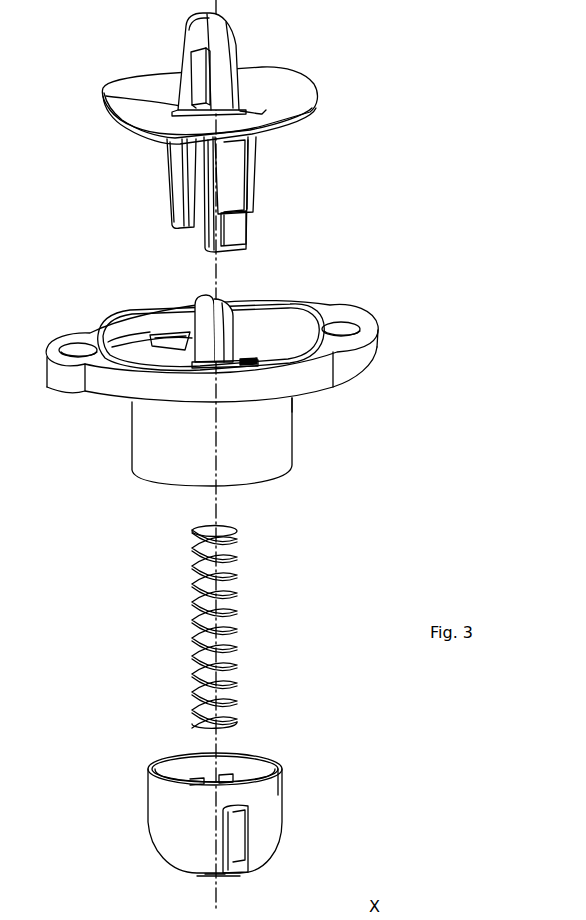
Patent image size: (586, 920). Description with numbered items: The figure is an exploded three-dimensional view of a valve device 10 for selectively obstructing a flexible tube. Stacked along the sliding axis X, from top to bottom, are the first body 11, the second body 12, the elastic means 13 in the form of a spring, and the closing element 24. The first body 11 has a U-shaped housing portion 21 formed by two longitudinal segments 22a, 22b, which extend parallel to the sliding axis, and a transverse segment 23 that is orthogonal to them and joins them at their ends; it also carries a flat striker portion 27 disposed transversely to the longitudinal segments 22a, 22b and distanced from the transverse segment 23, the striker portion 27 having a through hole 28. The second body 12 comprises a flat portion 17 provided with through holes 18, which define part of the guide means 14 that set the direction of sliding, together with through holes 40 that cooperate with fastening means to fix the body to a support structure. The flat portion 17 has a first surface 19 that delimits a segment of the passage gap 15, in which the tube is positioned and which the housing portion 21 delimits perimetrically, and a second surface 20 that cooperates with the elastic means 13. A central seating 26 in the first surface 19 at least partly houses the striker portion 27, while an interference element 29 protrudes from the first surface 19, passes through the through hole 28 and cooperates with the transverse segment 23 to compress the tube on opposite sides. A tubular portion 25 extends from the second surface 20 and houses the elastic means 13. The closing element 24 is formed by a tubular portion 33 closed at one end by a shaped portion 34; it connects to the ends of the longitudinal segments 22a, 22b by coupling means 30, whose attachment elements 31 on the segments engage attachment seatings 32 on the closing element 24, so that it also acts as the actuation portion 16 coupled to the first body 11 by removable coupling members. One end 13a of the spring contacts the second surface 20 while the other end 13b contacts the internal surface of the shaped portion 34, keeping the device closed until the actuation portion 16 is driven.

The valve device 10 is at (387, 90).
The first body 11 is at (192, 458).
The second body 12 is at (220, 371).
The elastic means 13 is at (212, 622).
The end of the spring 13a is at (194, 531).
The other end of the spring 13b is at (235, 721).
The guide means 14 is at (168, 348).
The passage gap 15 is at (188, 77).
The actuation portion 16 is at (197, 878).
The flat portion 17 is at (309, 374).
The through holes 18 is at (176, 328).
The first surface 19 is at (108, 340).
The second surface 20 is at (252, 404).
The U-shaped housing portion 21 is at (203, 59).
The longitudinal segment 22a is at (232, 192).
The longitudinal segment 22b is at (179, 174).
The transverse segment 23 is at (199, 36).
The closing element 24 is at (221, 833).
The tubular portion 25 is at (150, 453).
The central seating 26 is at (283, 333).
The striker portion 27 is at (286, 102).
The through hole 28 is at (194, 107).
The interference element 29 is at (201, 309).
The coupling means 30 is at (208, 525).
The attachment elements 31 is at (235, 229).
The attachment seatings 32 is at (252, 841).
The tubular portion 33 is at (168, 808).
The shaped portion 34 is at (178, 857).
The through holes 40 is at (80, 348).